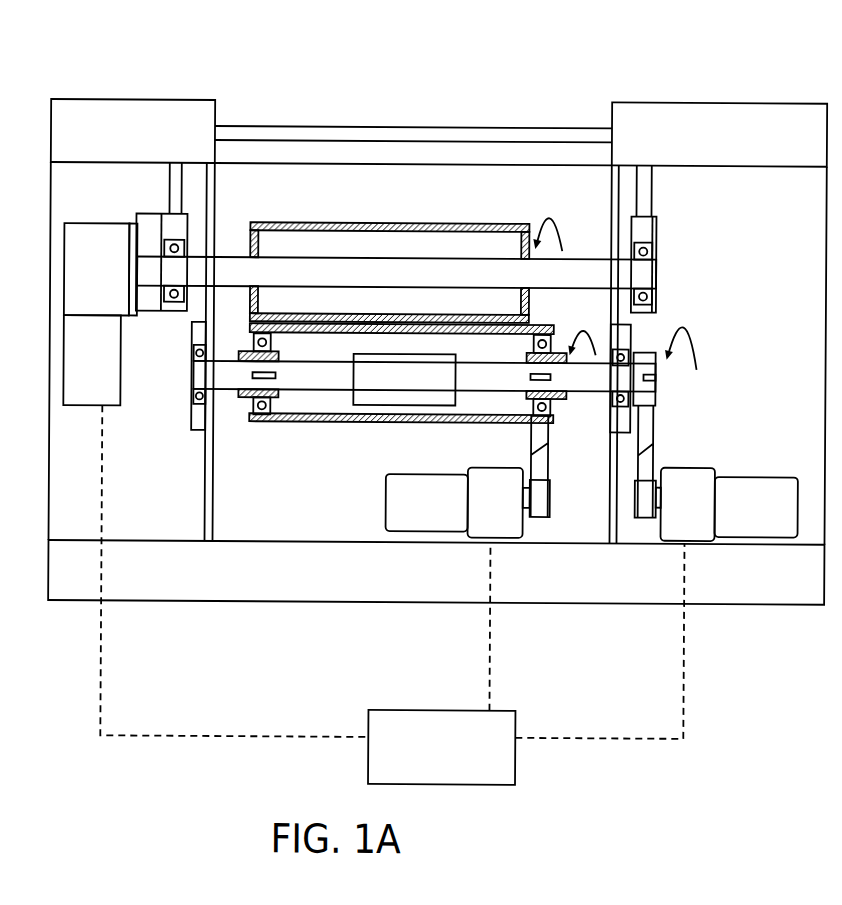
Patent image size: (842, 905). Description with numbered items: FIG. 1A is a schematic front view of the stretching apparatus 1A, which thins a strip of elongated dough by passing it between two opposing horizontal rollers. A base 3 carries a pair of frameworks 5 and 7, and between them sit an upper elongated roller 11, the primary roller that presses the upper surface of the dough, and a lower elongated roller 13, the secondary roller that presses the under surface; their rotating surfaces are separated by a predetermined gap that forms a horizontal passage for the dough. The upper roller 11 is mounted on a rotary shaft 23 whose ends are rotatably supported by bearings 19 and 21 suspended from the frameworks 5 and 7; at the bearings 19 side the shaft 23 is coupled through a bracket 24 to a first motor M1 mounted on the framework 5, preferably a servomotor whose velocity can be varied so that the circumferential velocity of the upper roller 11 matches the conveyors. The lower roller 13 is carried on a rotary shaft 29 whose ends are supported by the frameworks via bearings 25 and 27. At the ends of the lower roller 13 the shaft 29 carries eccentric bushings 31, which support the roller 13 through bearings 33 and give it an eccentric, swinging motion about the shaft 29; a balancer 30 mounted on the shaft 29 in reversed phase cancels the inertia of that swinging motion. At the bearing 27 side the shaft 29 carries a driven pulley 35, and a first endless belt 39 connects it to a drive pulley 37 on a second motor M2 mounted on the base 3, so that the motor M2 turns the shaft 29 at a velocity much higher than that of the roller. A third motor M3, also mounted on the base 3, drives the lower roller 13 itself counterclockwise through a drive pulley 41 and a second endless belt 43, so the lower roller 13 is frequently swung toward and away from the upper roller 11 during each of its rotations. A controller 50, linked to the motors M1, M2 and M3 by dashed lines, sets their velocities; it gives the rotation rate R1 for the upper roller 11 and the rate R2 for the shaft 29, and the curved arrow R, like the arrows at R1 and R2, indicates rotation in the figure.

The stretching apparatus 1A is at (620, 82).
The base 3 is at (405, 601).
The framework 5 is at (128, 112).
The framework 7 is at (740, 108).
The upper elongated roller 11 is at (437, 220).
The lower elongated roller 13 is at (320, 428).
The bearing 19 is at (183, 304).
The bearing 21 is at (658, 247).
The rotary shaft 23 is at (357, 260).
The bracket 24 is at (157, 260).
The bearing 25 is at (193, 397).
The bearing 27 is at (611, 397).
The rotary shaft 29 is at (364, 380).
The balancer 30 is at (445, 396).
The eccentric bushings 31 is at (296, 430).
The bearings 33 is at (257, 407).
The driven pulley 35 is at (657, 394).
The drive pulley 37 is at (650, 514).
The first endless belt 39 is at (655, 428).
The drive pulley 41 is at (543, 514).
The second endless belt 43 is at (551, 465).
The controller 50 is at (461, 715).
The first motor M1 is at (83, 393).
The second motor M2 is at (763, 481).
The third motor M3 is at (407, 483).
The rotation direction R is at (558, 229).
The rotation rate of upper roller R1 is at (697, 348).
The rotation rate of lower shaft R2 is at (586, 327).